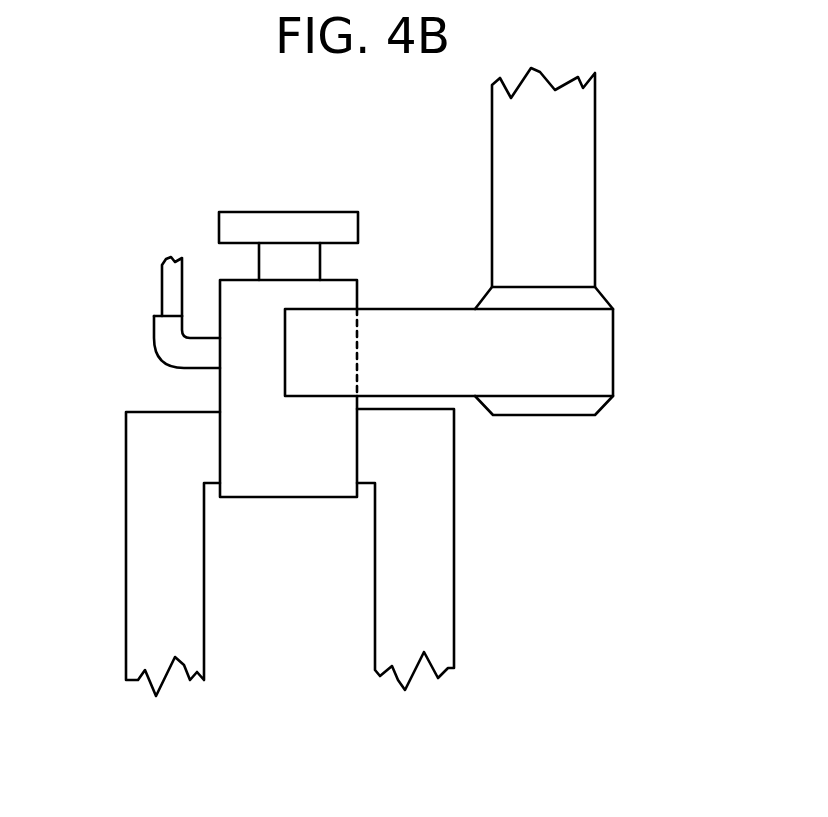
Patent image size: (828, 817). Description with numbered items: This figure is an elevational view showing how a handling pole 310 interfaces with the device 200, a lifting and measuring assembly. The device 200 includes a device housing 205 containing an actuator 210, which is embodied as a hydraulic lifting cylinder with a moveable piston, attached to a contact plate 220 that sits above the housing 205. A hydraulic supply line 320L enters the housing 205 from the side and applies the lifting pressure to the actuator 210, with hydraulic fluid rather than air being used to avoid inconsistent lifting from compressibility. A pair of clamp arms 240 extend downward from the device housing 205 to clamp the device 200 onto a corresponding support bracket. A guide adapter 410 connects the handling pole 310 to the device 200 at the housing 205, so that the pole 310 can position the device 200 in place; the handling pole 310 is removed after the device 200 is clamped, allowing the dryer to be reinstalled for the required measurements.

The device 200 is at (90, 607).
The device housing 205 is at (285, 497).
The actuator 210 is at (320, 260).
The contact plate 220 is at (308, 212).
The clamp arms 240 is at (454, 543).
The handling pole 310 is at (595, 183).
The supply line 320L is at (162, 283).
The guide adapter 410 is at (613, 335).